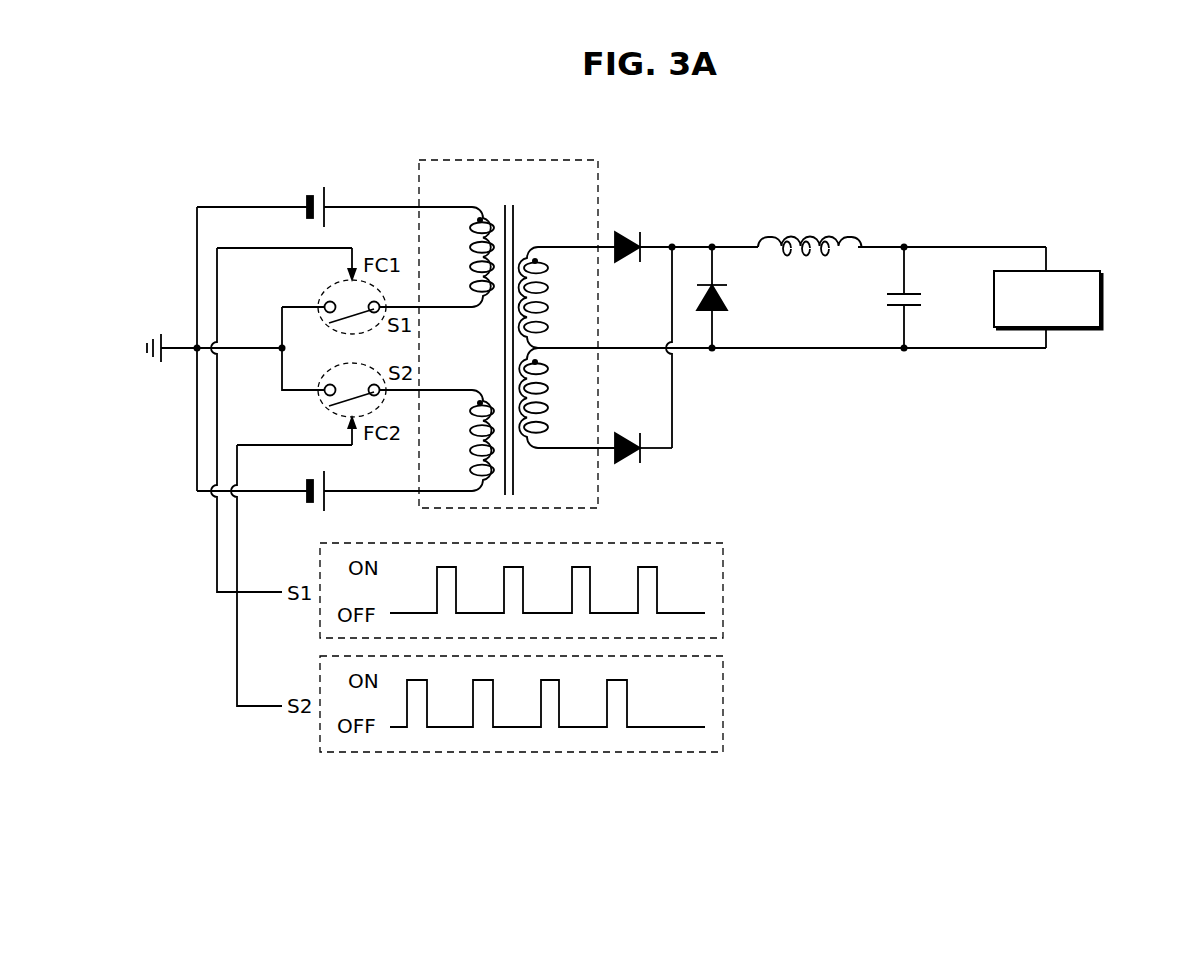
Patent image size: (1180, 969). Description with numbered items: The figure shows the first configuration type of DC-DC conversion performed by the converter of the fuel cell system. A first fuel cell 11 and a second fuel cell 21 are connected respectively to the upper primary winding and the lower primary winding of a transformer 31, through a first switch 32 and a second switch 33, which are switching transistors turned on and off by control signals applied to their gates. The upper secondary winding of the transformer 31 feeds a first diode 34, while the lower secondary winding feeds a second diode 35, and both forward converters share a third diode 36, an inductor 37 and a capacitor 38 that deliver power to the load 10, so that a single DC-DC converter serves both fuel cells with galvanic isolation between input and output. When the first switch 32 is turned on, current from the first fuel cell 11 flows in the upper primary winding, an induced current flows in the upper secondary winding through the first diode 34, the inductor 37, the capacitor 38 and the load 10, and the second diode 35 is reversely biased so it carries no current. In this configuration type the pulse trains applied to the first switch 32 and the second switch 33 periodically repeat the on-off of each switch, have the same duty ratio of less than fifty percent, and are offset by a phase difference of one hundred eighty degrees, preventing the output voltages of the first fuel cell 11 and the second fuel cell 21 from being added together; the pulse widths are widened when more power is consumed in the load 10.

The load 10 is at (1101, 299).
The first fuel cell 11 is at (330, 192).
The second fuel cell 21 is at (313, 508).
The transformer 31 is at (512, 158).
The first switch 32 is at (322, 296).
The second switch 33 is at (320, 402).
The first diode 34 is at (629, 232).
The second diode 35 is at (629, 433).
The third diode 36 is at (730, 318).
The inductor 37 is at (845, 232).
The capacitor 38 is at (922, 315).